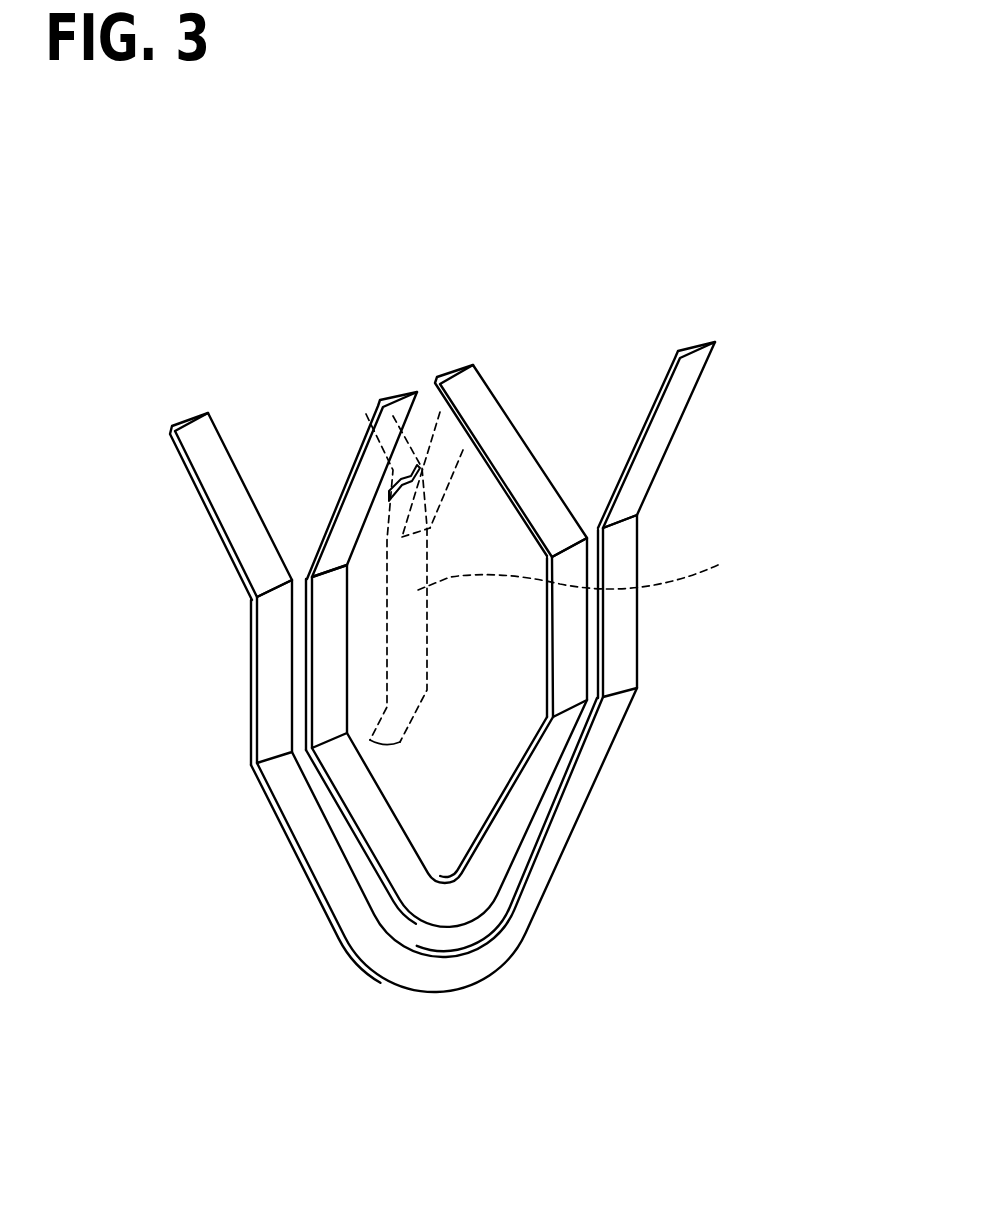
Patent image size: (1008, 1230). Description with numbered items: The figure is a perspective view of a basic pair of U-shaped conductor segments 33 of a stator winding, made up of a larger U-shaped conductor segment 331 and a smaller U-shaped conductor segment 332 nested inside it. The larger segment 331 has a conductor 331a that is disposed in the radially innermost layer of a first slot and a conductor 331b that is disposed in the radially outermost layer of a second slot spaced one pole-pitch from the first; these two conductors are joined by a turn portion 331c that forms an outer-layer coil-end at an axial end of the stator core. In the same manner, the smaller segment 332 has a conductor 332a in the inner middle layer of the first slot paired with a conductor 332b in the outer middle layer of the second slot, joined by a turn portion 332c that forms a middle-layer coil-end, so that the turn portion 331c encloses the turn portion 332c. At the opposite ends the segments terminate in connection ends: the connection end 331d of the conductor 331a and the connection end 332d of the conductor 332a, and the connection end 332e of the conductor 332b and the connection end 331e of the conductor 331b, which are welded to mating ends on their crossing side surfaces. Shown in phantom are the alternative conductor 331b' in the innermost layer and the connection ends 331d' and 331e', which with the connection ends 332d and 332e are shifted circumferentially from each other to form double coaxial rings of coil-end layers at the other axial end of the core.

The U-shaped conductor segment 33 is at (332, 960).
The larger U-shaped conductor segment 331 is at (685, 461).
The conductor 331a is at (270, 630).
The conductor 331b is at (713, 606).
The conductor 331b' is at (616, 567).
The turn portion 331c is at (430, 977).
The connection end 331d is at (153, 506).
The connection end 331d' is at (313, 513).
The connection end 331e is at (728, 409).
The connection end 331e' is at (498, 406).
The smaller U-shaped conductor segment 332 is at (548, 466).
The conductor 332a is at (325, 678).
The conductor 332b is at (570, 687).
The turn portion 332c is at (443, 910).
The connection end 332d is at (405, 395).
The connection end 332e is at (452, 370).